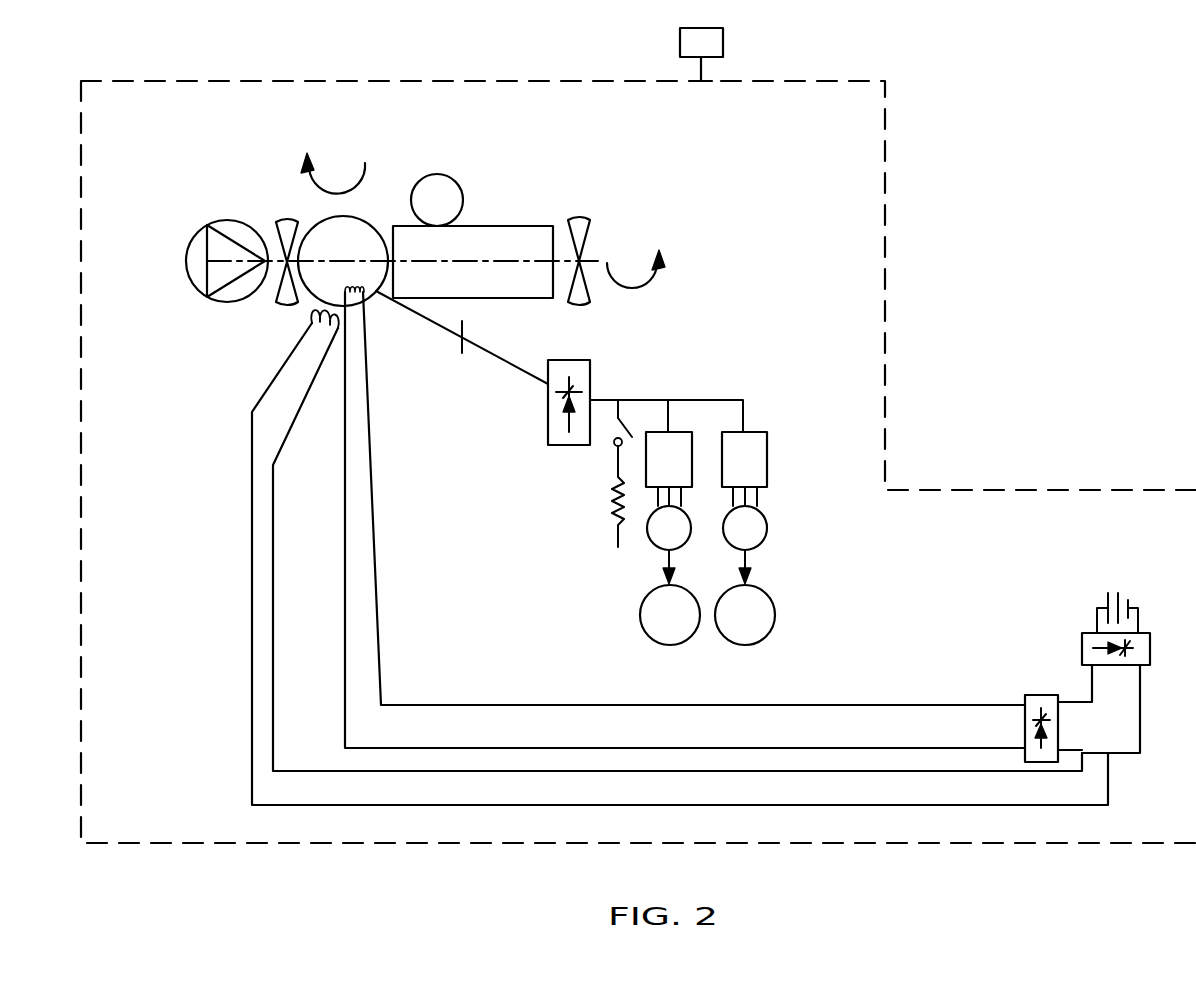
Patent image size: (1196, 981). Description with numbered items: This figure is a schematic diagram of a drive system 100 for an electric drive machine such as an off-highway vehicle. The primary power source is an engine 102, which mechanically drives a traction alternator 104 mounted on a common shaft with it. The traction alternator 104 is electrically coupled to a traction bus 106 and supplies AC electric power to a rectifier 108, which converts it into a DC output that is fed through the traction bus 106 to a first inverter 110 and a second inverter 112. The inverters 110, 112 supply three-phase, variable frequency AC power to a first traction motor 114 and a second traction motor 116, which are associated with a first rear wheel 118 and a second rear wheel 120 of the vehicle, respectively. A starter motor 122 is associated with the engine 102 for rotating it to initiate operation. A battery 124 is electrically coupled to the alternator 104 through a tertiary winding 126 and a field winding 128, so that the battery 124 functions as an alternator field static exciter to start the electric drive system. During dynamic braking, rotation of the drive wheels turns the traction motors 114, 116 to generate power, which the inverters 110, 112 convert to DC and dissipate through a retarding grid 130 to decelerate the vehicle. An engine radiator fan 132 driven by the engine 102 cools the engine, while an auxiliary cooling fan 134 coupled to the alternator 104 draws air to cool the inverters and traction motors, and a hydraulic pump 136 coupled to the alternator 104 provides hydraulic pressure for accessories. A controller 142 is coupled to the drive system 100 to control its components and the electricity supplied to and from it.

The drive system 100 is at (1052, 91).
The engine 102 is at (500, 225).
The traction alternator 104 is at (372, 222).
The traction bus 106 is at (635, 375).
The rectifier 108 is at (567, 359).
The first inverter 110 is at (680, 431).
The second inverter 112 is at (768, 457).
The first traction motor 114 is at (652, 540).
The second traction motor 116 is at (768, 528).
The first rear wheel 118 is at (640, 612).
The second rear wheel 120 is at (776, 612).
The starter motor 122 is at (440, 174).
The battery 124 is at (1115, 590).
The tertiary winding 126 is at (383, 498).
The field winding 128 is at (302, 435).
The retarding grid 130 is at (604, 497).
The engine radiator fan 132 is at (581, 218).
The auxiliary cooling fan 134 is at (286, 220).
The hydraulic pump 136 is at (186, 258).
The controller 142 is at (724, 40).